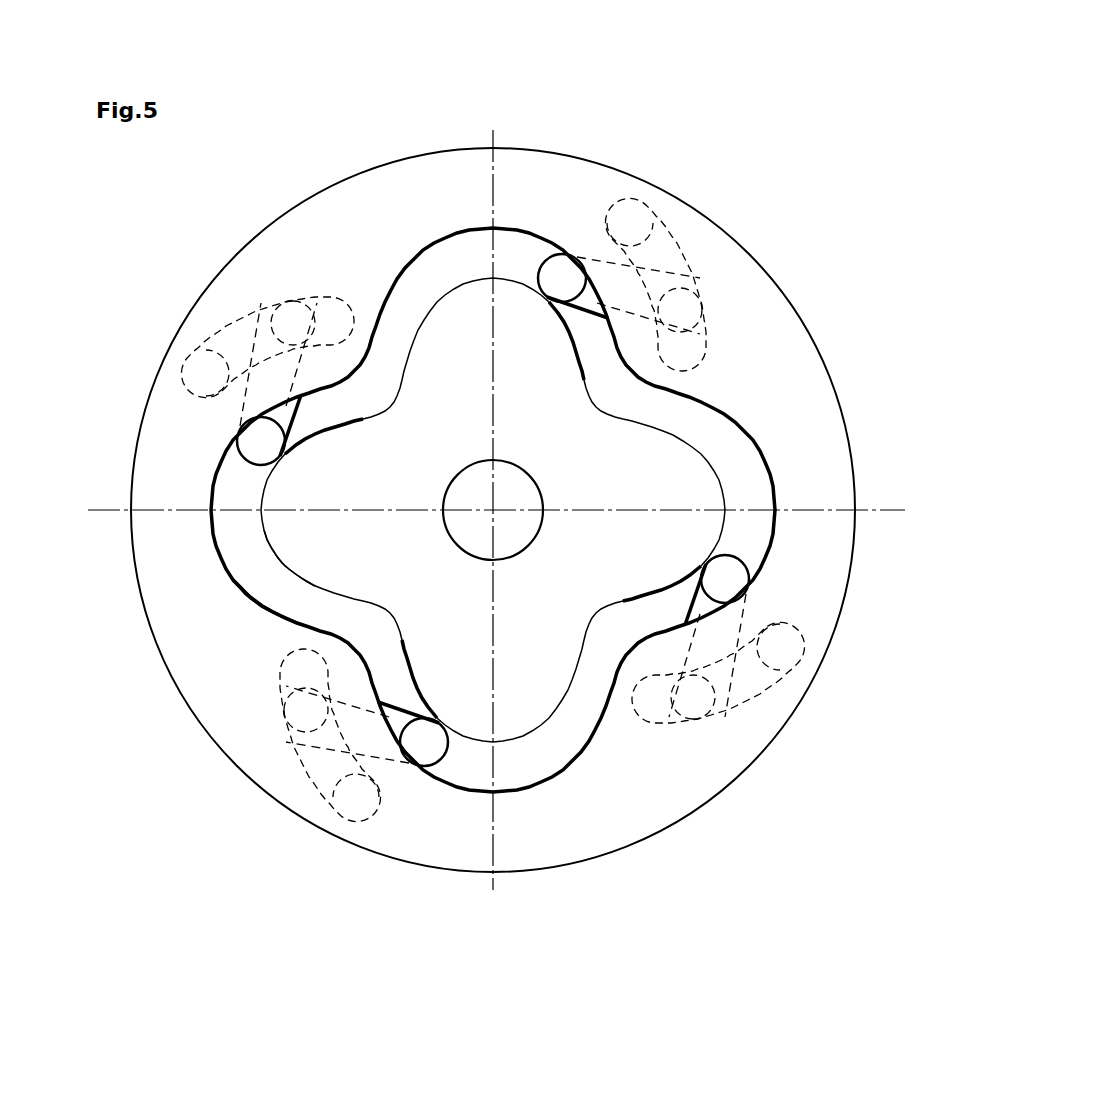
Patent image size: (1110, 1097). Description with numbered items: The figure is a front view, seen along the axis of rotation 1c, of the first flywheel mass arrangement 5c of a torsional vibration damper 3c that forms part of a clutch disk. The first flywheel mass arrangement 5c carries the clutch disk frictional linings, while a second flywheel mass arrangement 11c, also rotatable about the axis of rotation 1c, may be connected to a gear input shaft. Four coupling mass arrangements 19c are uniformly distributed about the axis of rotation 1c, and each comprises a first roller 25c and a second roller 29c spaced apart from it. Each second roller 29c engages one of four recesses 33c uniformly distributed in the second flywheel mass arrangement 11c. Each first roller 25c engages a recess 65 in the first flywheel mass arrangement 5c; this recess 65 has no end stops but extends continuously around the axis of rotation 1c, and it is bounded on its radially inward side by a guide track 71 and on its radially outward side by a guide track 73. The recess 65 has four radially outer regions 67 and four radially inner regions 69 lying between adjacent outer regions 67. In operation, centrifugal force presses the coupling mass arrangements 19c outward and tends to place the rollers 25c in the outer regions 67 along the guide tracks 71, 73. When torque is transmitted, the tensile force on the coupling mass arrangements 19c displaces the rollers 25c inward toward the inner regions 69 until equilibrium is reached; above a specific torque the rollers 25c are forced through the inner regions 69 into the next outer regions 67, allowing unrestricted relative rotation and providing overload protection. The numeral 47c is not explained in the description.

The axis of rotation 1c is at (497, 514).
The torsional vibration damper 3c is at (258, 215).
The first flywheel mass arrangement 5c is at (357, 173).
The second flywheel mass arrangement 11c is at (595, 257).
The coupling mass arrangement 19c is at (690, 261).
The first roller 25c is at (556, 254).
The second roller 29c is at (710, 268).
The recess 33c is at (668, 238).
The pin bore 47c is at (642, 215).
The recess 65 is at (471, 246).
The radially outer region 67 is at (438, 230).
The radially inner region 69 is at (395, 617).
The guide track 71 is at (280, 563).
The guide track 73 is at (280, 617).